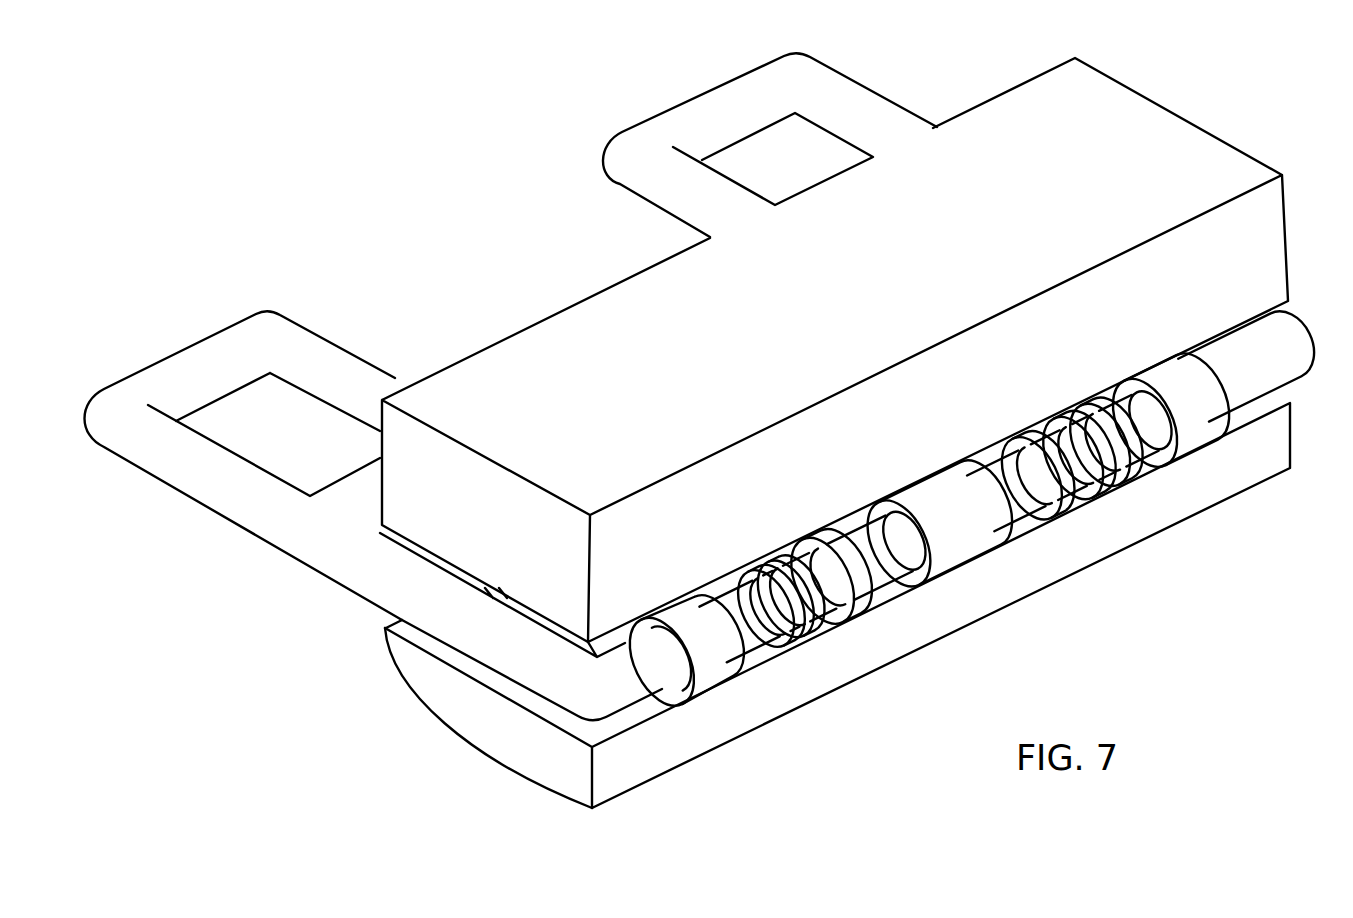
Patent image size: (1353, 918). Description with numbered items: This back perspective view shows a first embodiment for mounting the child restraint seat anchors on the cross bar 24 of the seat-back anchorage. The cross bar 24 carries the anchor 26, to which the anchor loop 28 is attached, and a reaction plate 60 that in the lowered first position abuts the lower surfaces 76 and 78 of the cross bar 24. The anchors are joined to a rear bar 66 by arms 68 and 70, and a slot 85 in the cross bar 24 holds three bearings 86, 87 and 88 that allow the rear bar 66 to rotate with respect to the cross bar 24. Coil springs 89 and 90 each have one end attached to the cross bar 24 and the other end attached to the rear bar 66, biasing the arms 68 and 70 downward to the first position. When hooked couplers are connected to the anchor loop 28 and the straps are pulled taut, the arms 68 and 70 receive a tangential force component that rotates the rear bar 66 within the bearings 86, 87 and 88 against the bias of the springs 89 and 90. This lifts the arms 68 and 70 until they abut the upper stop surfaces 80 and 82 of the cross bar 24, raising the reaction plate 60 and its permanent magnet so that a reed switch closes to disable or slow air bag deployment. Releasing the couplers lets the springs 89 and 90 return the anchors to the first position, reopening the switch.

The cross bar 24 is at (597, 300).
The child restraint seat anchor 26 is at (725, 100).
The arm 68 is at (893, 105).
The anchor loop 28 is at (222, 340).
The reaction plate 60 is at (338, 493).
The arm 70 is at (347, 575).
The upper stop surface 82 is at (517, 605).
The lower surface 76 is at (1275, 402).
The lower surface 78 is at (530, 702).
The bearing 86 is at (680, 603).
The rear bar 66 is at (1020, 495).
The coil spring 89 is at (763, 567).
The slot 85 is at (853, 520).
The bearing 87 is at (940, 485).
The coil spring 90 is at (1077, 412).
The bearing 88 is at (1158, 375).
The upper stop surface 80 is at (1197, 355).